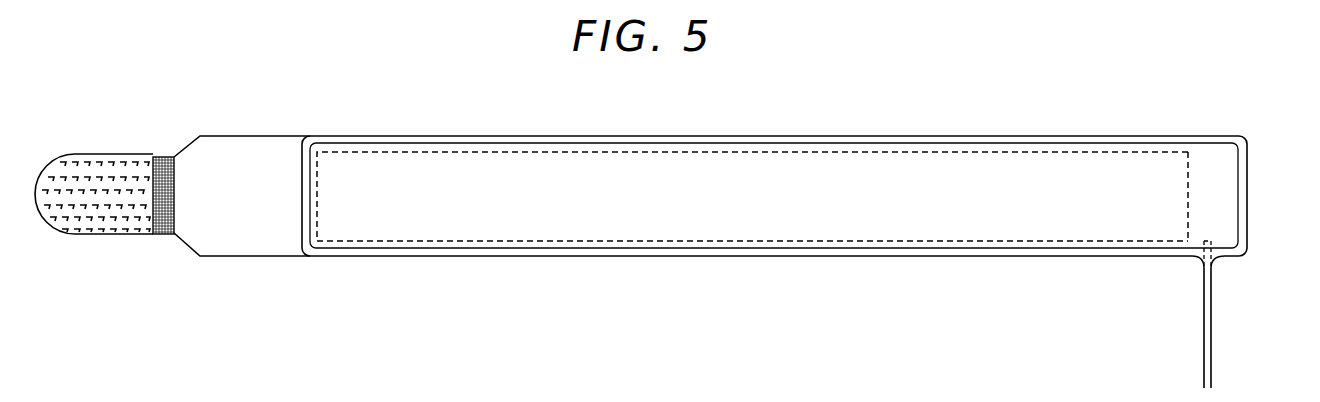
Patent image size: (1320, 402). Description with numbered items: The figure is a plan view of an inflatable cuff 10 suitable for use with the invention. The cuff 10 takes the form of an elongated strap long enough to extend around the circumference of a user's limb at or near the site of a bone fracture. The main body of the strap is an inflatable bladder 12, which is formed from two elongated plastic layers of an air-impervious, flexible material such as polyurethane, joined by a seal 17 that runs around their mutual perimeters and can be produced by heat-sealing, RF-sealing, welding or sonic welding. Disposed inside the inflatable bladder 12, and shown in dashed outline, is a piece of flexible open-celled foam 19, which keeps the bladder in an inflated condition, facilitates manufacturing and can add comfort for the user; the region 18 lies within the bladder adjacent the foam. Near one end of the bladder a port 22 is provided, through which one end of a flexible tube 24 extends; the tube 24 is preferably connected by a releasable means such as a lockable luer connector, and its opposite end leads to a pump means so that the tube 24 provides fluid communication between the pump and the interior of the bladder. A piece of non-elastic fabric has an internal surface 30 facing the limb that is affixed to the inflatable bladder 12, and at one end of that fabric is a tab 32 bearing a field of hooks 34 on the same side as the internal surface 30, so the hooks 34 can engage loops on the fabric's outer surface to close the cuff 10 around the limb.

The cuff 10 is at (1153, 94).
The inflatable bladder 12 is at (1220, 197).
The seal 17 is at (1243, 140).
The interior chamber region 18 is at (1217, 185).
The flexible open-celled foam 19 is at (993, 175).
The port 22 is at (1201, 268).
The flexible tube 24 is at (1212, 360).
The internal surface 30 is at (260, 216).
The tab 32 is at (99, 153).
The field of hooks 34 is at (80, 222).